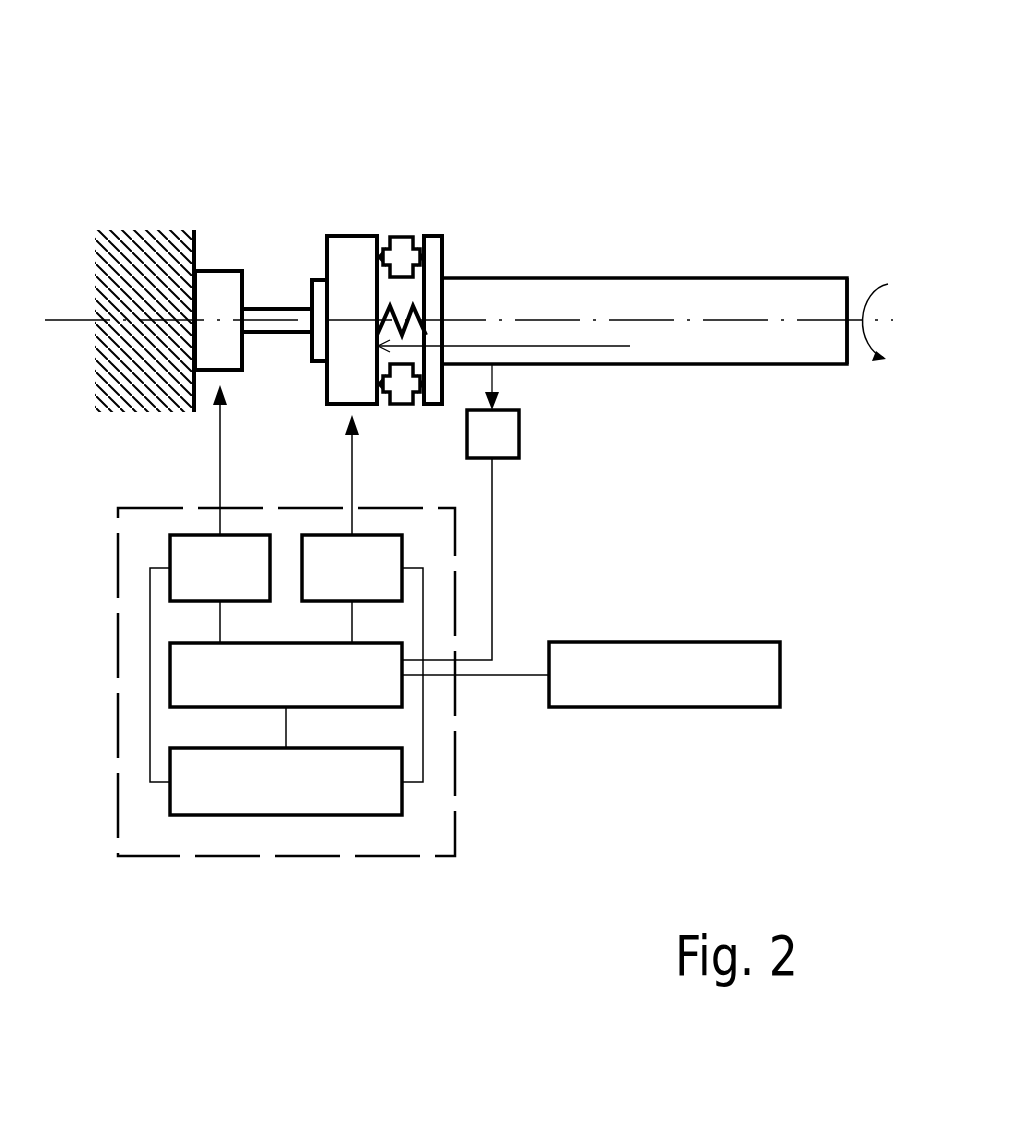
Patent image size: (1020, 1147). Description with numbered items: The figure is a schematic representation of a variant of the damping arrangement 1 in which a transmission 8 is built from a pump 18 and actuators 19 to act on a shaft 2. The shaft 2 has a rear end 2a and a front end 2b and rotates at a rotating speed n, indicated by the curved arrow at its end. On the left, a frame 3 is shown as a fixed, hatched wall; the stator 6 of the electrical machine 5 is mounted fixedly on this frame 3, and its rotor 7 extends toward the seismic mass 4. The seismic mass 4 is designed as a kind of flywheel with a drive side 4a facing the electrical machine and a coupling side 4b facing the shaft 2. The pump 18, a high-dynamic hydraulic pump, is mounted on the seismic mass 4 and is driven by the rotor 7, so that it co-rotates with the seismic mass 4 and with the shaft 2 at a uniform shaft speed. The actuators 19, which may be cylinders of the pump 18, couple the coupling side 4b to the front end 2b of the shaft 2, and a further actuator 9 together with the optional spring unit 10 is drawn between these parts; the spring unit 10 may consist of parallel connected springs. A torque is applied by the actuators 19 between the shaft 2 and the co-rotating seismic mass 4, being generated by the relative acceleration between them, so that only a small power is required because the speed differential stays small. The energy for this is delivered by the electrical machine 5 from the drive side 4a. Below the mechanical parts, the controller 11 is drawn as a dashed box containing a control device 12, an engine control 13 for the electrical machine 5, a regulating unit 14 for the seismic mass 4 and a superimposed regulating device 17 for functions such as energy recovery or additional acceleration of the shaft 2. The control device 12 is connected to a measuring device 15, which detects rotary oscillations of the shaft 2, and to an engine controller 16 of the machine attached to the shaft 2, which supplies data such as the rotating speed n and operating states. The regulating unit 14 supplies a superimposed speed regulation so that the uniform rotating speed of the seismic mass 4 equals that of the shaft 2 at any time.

The device for adjusting a rotational speed 1 is at (367, 105).
The shaft 2 is at (660, 278).
The first end of shaft 2a is at (853, 318).
The front end of shaft 2b is at (427, 237).
The frame 3 is at (125, 240).
The seismic mass 4 is at (342, 236).
The drive side 4a is at (312, 434).
The coupling side 4b is at (630, 346).
The electrical machine 5 is at (258, 372).
The stator 6 is at (212, 270).
The rotor 7 is at (270, 308).
The transmission 8 is at (326, 160).
The housing 9 is at (402, 393).
The spring unit 10 is at (410, 303).
The controller 11 is at (193, 883).
The control device 12 is at (308, 689).
The engine control 13 is at (235, 585).
The regulating unit 14 is at (367, 585).
The measuring device 15 is at (512, 437).
The engine controller 16 is at (678, 689).
The superimposed regulating device 17 is at (308, 793).
The pump 18 is at (315, 279).
The actuators 19 is at (397, 237).
The rotating speed n is at (878, 283).